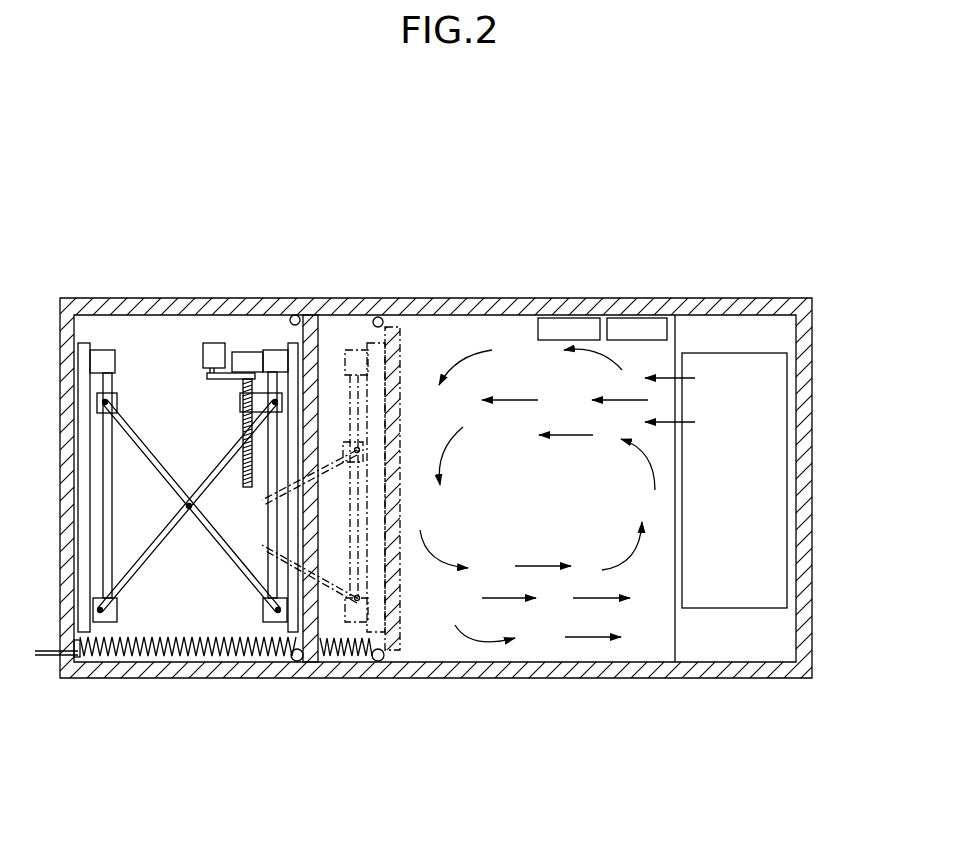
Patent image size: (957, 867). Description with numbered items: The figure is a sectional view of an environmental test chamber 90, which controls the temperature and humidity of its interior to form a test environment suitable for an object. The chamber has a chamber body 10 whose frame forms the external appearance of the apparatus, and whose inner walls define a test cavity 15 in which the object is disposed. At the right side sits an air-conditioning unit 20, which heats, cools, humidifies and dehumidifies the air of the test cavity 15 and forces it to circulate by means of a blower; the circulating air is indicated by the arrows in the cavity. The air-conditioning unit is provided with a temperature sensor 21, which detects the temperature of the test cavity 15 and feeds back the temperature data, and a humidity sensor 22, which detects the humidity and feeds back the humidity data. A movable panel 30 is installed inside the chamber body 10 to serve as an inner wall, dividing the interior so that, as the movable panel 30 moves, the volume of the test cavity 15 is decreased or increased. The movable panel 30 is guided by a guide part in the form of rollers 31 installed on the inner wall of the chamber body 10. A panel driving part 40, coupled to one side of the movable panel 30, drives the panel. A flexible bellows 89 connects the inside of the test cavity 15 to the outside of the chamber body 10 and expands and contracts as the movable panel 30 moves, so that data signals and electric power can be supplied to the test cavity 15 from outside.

The environmental test chamber 90 is at (124, 246).
The chamber body 10 is at (543, 667).
The test cavity 15 is at (524, 372).
The air-conditioning unit 20 is at (762, 455).
The temperature sensor 21 is at (565, 326).
The humidity sensor 22 is at (635, 326).
The movable panel 30 is at (312, 352).
The rollers 31 is at (294, 314).
The panel driving part 40 is at (238, 350).
The flexible bellows 89 is at (177, 646).